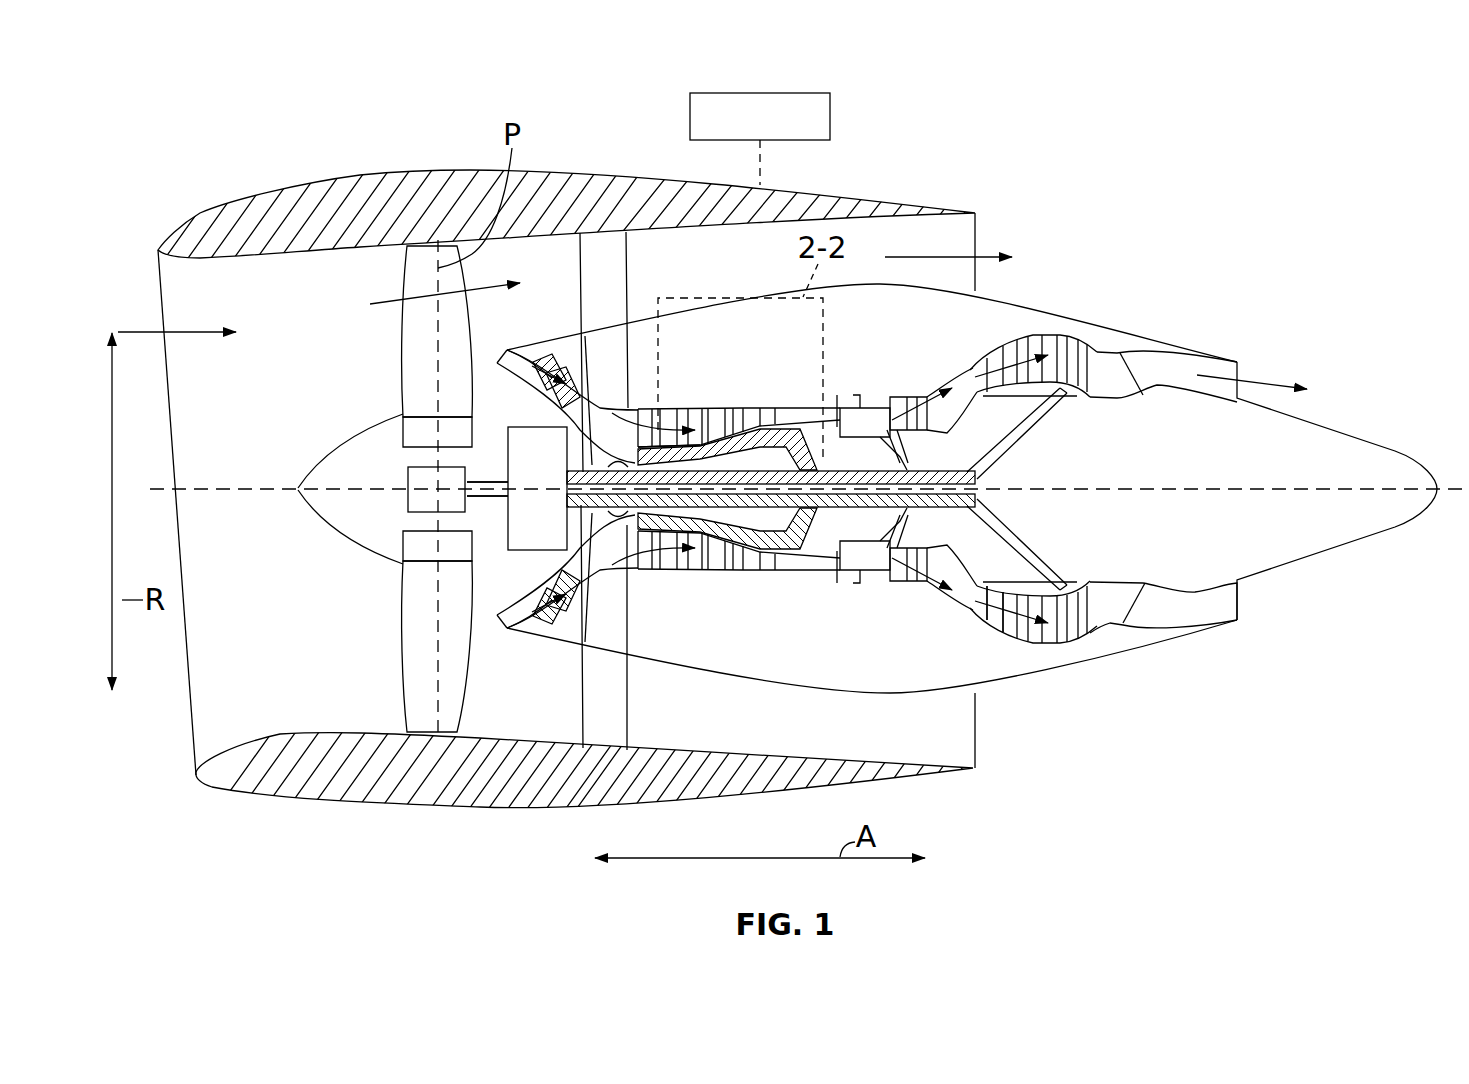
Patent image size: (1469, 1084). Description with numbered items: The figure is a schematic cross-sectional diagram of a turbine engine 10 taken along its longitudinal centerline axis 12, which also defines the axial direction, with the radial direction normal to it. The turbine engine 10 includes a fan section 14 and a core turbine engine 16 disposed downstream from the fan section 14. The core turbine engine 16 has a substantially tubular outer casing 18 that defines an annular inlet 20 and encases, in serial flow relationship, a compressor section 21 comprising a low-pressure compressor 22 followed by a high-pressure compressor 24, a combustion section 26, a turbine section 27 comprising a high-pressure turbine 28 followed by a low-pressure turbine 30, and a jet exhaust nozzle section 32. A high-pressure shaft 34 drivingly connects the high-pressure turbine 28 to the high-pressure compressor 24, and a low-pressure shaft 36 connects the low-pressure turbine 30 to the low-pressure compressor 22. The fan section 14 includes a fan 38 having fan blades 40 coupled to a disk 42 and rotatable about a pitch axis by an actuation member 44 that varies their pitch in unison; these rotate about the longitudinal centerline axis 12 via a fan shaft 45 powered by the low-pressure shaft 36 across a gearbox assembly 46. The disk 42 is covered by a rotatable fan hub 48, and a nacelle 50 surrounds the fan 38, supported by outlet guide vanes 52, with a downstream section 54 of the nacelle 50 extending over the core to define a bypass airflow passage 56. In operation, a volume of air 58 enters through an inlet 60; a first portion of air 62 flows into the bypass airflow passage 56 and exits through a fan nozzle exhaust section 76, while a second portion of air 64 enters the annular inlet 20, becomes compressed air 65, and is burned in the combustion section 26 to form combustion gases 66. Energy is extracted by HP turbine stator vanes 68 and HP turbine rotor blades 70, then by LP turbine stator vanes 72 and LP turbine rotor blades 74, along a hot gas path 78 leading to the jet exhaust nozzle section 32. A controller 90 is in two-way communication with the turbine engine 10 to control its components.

The turbine engine 10 is at (1160, 172).
The longitudinal centerline axis 12 is at (1234, 489).
The fan section 14 is at (370, 263).
The core turbine engine 16 is at (855, 322).
The outer casing 18 is at (807, 680).
The annular inlet 20 is at (512, 618).
The compressor section 21 is at (710, 357).
The low-pressure compressor 22 is at (565, 560).
The high-pressure compressor 24 is at (665, 556).
The combustion section 26 is at (847, 566).
The turbine section 27 is at (965, 348).
The high-pressure turbine 28 is at (935, 573).
The low-pressure turbine 30 is at (1062, 646).
The jet exhaust nozzle section 32 is at (1145, 618).
The high-pressure shaft 34 is at (828, 437).
The low-pressure shaft 36 is at (1012, 445).
The fan 38 is at (290, 615).
The fan blades 40 is at (400, 637).
The disk 42 is at (422, 433).
The actuation member 44 is at (407, 495).
The fan shaft 45 is at (477, 481).
The gearbox assembly 46 is at (530, 376).
The fan hub 48 is at (327, 524).
The nacelle 50 is at (415, 812).
The outlet guide vanes 52 is at (628, 292).
The downstream section 54 is at (855, 195).
The bypass airflow passage 56 is at (743, 275).
The volume of air 58 is at (210, 328).
The inlet 60 is at (194, 690).
The first portion of air 62 is at (380, 305).
The second portion of air 64 is at (504, 351).
The compressed air 65 is at (683, 418).
The combustion gases 66 is at (897, 407).
The HP turbine stator vanes 68 is at (897, 586).
The HP turbine rotor blades 70 is at (913, 565).
The LP turbine stator vanes 72 is at (978, 612).
The LP turbine rotor blades 74 is at (1003, 618).
The fan nozzle exhaust section 76 is at (968, 240).
The hot gas path 78 is at (962, 386).
The controller 90 is at (787, 94).